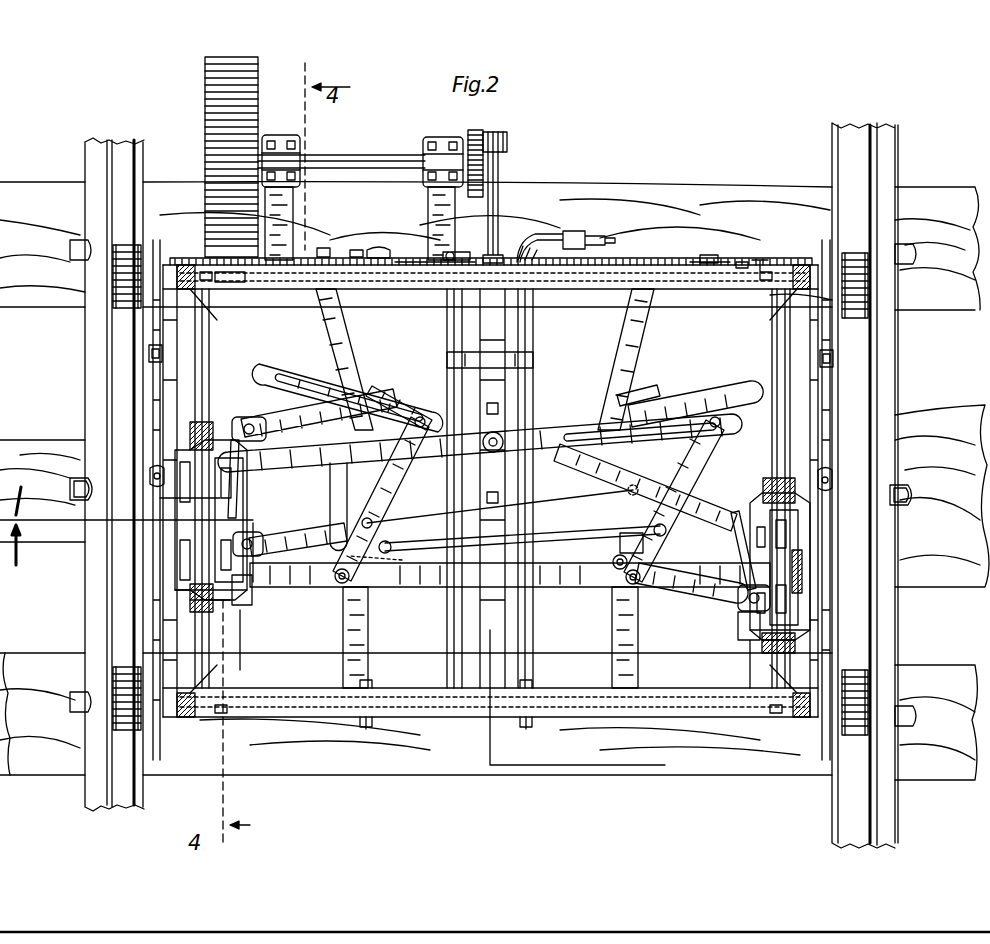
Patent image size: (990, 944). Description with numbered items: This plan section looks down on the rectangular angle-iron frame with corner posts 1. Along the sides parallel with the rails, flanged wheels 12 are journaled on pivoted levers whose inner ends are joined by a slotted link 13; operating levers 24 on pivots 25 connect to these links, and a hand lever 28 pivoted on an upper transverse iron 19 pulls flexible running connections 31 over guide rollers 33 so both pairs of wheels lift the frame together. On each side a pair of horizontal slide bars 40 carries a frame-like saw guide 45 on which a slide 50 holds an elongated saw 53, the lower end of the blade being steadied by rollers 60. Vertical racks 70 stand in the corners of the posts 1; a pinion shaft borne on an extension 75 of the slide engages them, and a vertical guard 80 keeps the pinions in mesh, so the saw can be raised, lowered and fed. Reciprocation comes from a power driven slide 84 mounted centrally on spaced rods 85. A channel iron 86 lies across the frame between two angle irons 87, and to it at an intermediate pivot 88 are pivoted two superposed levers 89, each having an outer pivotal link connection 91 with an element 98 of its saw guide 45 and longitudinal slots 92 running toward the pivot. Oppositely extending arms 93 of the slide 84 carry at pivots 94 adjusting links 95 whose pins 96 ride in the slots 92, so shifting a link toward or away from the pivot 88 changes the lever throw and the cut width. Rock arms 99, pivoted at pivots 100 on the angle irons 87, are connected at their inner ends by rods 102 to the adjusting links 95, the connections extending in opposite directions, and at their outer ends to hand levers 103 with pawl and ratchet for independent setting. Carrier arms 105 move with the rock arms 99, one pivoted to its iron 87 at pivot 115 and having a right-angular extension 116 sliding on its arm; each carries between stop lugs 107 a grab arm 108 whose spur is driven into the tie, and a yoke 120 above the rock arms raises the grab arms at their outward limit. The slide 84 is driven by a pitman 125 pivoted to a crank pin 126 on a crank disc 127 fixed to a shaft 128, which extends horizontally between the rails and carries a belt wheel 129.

The corner posts 1 is at (163, 280).
The flanged wheel 12 is at (120, 250).
The link 13 is at (150, 476).
The upper transverse iron 19 is at (682, 270).
The operating levers 24 is at (153, 335).
The pivot 25 is at (149, 355).
The hand lever 28 is at (545, 235).
The flexible running connections 31 is at (316, 248).
The guide rollers 33 is at (190, 258).
The slide bars 40 is at (209, 355).
The saw guide 45 is at (190, 590).
The slide 50 is at (160, 498).
The saw 53 is at (243, 518).
The rollers 60 is at (182, 465).
The racks 70 is at (200, 280).
The extension 75 is at (802, 568).
The guard 80 is at (215, 280).
The power driven slide 84 is at (533, 360).
The rods 85 is at (455, 672).
The channel iron 86 is at (490, 680).
The angle irons 87 is at (355, 645).
The pivot 88 is at (483, 447).
The levers 89 is at (303, 473).
The pivotal link connection 91 is at (238, 493).
The slots 92 is at (300, 366).
The arms 93 is at (415, 588).
The pivot 94 is at (350, 588).
The link 95 is at (390, 488).
The pin 96 is at (421, 416).
The element 98 is at (242, 608).
The rock arms 99 is at (348, 352).
The pivot 100 is at (372, 398).
The rod 102 is at (560, 540).
The hand lever 103 is at (410, 258).
The carrier arm 105 is at (255, 417).
The stop lugs 107 is at (258, 426).
The grab arm 108 is at (295, 422).
The pivot 115 is at (618, 572).
The extension 116 is at (380, 548).
The yoke 120 is at (362, 520).
The pitman 125 is at (498, 178).
The crank pin 126 is at (507, 140).
The crank disc 127 is at (476, 132).
The shaft 128 is at (360, 155).
The belt wheel 129 is at (228, 73).